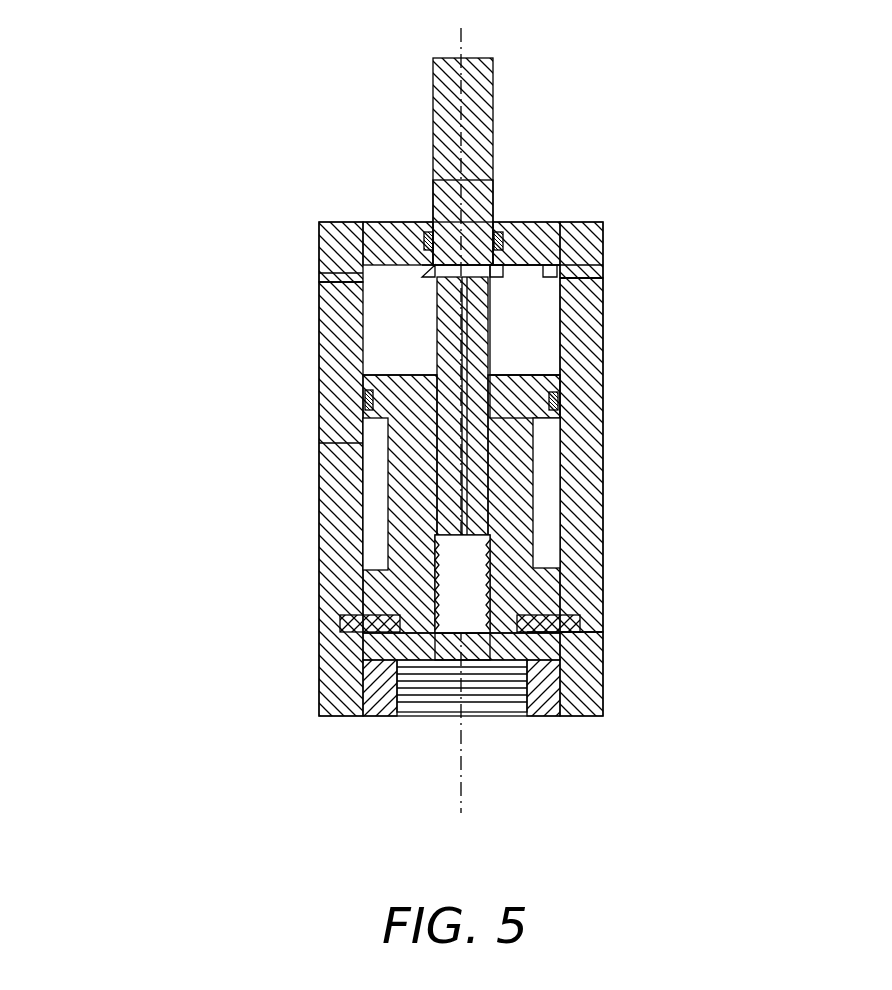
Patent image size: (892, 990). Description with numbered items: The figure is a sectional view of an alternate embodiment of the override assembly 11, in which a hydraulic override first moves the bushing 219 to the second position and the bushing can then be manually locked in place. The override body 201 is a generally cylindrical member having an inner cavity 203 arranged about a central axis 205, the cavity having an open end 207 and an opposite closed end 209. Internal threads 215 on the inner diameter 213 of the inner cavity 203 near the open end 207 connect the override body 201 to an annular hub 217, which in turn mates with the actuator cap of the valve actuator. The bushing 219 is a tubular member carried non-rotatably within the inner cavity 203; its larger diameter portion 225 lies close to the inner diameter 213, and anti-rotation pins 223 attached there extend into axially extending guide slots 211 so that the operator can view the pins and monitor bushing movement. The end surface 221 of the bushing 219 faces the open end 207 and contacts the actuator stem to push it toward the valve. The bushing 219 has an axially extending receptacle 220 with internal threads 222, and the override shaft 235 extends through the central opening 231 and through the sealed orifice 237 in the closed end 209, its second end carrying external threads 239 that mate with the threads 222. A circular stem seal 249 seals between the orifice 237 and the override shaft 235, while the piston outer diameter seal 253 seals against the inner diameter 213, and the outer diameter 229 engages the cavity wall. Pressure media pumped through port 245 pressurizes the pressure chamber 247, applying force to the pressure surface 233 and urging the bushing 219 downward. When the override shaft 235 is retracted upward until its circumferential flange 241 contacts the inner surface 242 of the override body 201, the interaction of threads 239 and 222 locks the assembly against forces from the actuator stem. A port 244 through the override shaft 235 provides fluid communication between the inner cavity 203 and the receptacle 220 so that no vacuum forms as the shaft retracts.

The override assembly 11 is at (192, 68).
The override body 201 is at (318, 252).
The inner cavity 203 is at (380, 296).
The central axis 205 is at (458, 786).
The open end 207 is at (577, 717).
The closed end 209 is at (577, 222).
The guide slot 211 is at (340, 443).
The inner diameter 213 is at (548, 326).
The internal threads 215 is at (340, 695).
The annular hub 217 is at (560, 672).
The bushing 219 is at (376, 530).
The receptacle 220 is at (488, 548).
The end surface 221 is at (480, 720).
The internal threads 222 is at (490, 583).
The anti-rotation pin 223 is at (345, 620).
The larger diameter portion 225 is at (385, 586).
The outer diameter 229 is at (550, 398).
The central opening 231 is at (442, 380).
The pressure surface 233 is at (548, 368).
The override shaft 235 is at (433, 107).
The orifice 237 is at (433, 188).
The external threads 239 is at (520, 486).
The circumferential flange 241 is at (430, 288).
The inner surface 242 is at (565, 272).
The port 244 is at (462, 470).
The port 245 is at (600, 286).
The pressure chamber 247 is at (518, 275).
The circular stem seal 249 is at (415, 247).
The circular piston outer diameter seal 253 is at (360, 398).